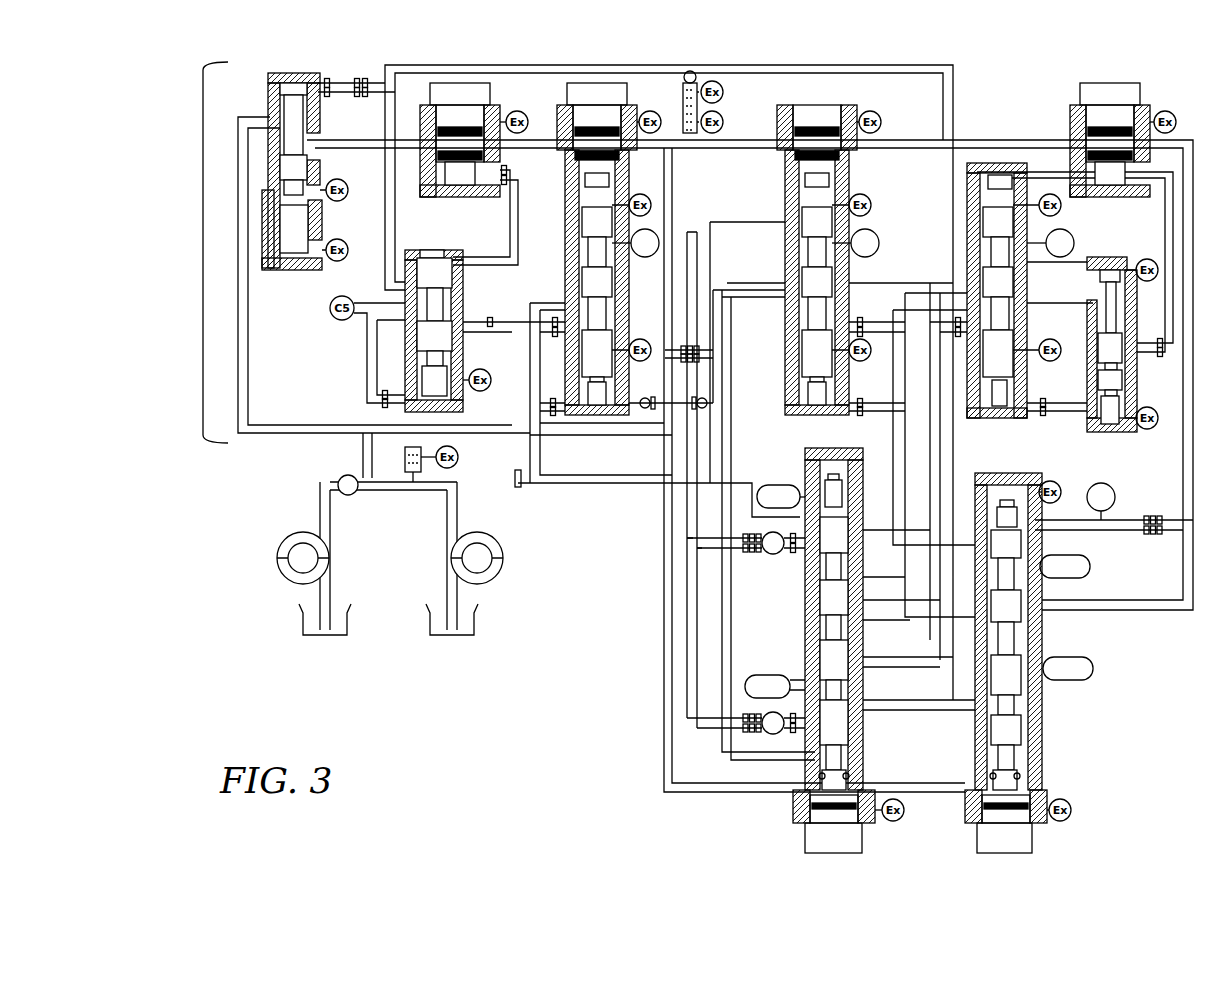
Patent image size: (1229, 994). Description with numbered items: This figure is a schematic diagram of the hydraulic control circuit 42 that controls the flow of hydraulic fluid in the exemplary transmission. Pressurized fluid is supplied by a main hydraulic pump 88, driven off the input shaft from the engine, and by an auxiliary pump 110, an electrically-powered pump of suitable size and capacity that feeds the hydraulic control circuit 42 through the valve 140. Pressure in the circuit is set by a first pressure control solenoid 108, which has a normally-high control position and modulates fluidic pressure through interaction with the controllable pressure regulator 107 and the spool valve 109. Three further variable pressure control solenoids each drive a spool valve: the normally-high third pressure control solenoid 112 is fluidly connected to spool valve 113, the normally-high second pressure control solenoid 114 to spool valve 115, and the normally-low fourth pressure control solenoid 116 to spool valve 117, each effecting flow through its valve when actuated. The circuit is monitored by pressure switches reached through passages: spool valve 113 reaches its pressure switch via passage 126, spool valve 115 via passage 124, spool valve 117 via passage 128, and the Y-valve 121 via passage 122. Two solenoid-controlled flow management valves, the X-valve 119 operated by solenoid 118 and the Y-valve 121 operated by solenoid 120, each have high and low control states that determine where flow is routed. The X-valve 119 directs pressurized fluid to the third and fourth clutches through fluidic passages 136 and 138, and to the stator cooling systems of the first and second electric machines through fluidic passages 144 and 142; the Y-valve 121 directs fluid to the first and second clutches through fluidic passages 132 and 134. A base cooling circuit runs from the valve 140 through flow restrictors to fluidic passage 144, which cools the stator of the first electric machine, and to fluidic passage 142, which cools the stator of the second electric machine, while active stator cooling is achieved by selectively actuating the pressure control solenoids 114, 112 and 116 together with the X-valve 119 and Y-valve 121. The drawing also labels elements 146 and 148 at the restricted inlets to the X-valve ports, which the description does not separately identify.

The hydraulic control circuit 42 is at (203, 140).
The main hydraulic pump 88 is at (492, 574).
The controllable pressure regulator 107 is at (297, 266).
The pressure control solenoid PCS1 108 is at (445, 83).
The spool valve 109 is at (447, 272).
The auxiliary pump 110 is at (290, 574).
The pressure control solenoid PCS3 112 is at (1087, 83).
The spool valve 113 is at (1003, 281).
The pressure control solenoid PCS2 114 is at (790, 83).
The spool valve 115 is at (787, 192).
The pressure control solenoid PCS4 116 is at (580, 83).
The spool valve 117 is at (597, 222).
The solenoid 118 is at (817, 843).
The X-valve 119 is at (826, 618).
The solenoid 120 is at (987, 843).
The Y-valve 121 is at (1012, 722).
The passage 122 is at (1106, 488).
The passage 124 is at (878, 238).
The passage 126 is at (1072, 238).
The passage 128 is at (660, 232).
The fluidic passage 132 is at (1093, 669).
The fluidic passage 134 is at (1090, 567).
The fluidic passage 136 is at (762, 675).
The fluidic passage 138 is at (773, 484).
The valve 140 is at (342, 478).
The fluidic passage 142 is at (773, 735).
The fluidic passage 144 is at (773, 555).
The orifice to port A 146 is at (748, 545).
The orifice to port B 148 is at (748, 722).